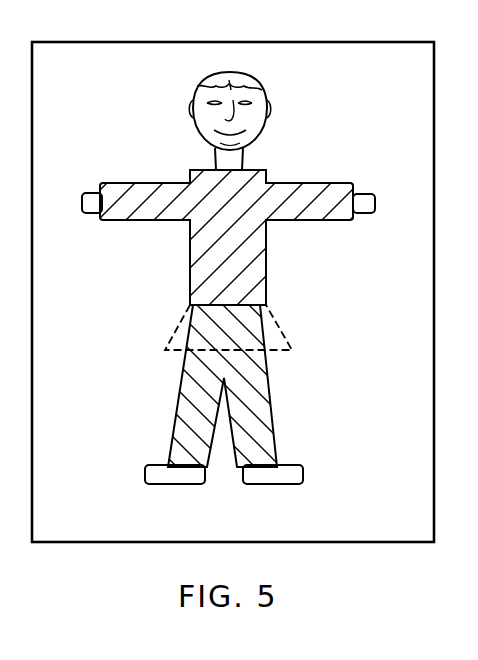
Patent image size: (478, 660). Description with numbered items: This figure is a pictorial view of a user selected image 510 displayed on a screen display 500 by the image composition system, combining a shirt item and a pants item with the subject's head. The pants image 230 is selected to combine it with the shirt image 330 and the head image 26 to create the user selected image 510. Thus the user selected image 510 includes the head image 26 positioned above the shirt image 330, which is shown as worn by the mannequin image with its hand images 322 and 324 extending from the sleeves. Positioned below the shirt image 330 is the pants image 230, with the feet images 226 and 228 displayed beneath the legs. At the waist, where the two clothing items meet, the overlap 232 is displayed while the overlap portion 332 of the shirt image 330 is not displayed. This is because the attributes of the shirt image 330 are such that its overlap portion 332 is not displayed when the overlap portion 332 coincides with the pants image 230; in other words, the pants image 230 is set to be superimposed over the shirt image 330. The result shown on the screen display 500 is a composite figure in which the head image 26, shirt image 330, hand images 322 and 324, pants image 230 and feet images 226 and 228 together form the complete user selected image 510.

The screen display 500 is at (125, 58).
The user selected image 510 is at (389, 85).
The head image 26 is at (195, 102).
The hand image 322 is at (84, 196).
The hand image 324 is at (374, 196).
The shirt image 330 is at (268, 250).
The overlap 232 is at (235, 311).
The overlap portion 332 is at (286, 322).
The pants image 230 is at (272, 383).
The feet image 226 is at (158, 486).
The feet image 228 is at (290, 486).